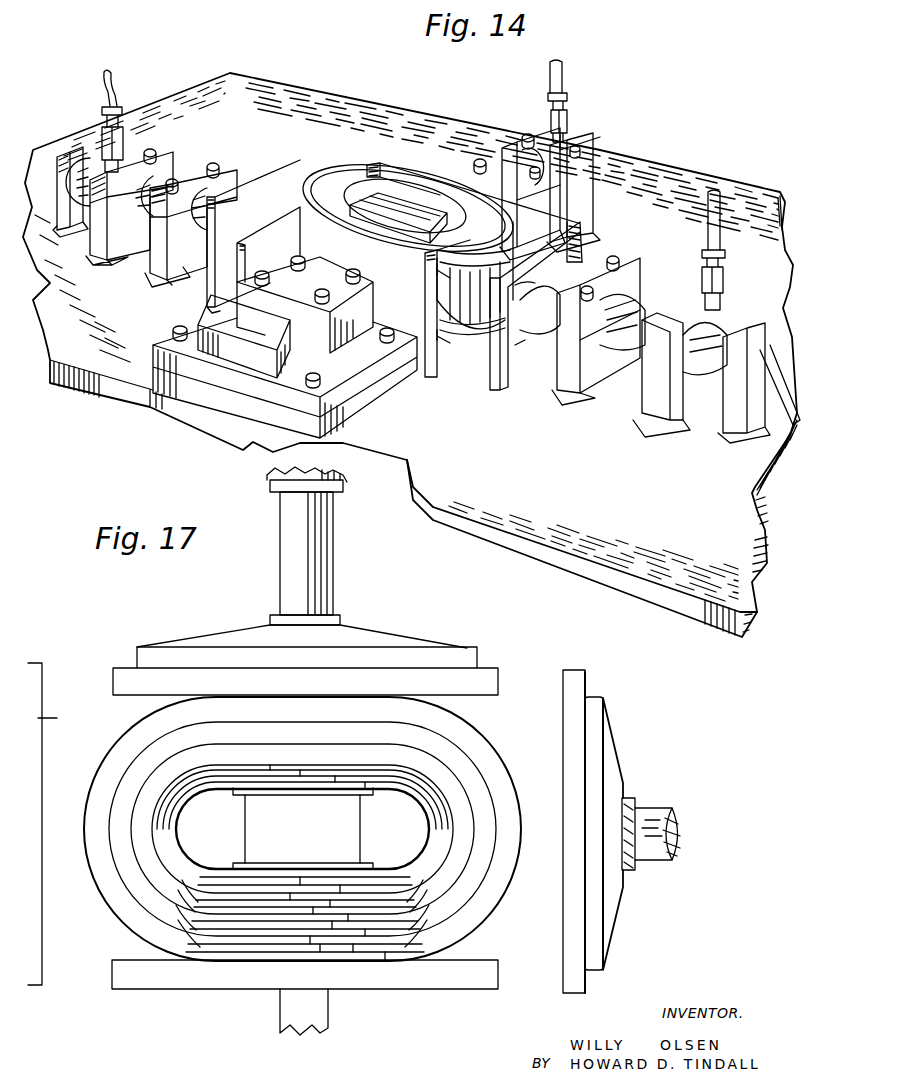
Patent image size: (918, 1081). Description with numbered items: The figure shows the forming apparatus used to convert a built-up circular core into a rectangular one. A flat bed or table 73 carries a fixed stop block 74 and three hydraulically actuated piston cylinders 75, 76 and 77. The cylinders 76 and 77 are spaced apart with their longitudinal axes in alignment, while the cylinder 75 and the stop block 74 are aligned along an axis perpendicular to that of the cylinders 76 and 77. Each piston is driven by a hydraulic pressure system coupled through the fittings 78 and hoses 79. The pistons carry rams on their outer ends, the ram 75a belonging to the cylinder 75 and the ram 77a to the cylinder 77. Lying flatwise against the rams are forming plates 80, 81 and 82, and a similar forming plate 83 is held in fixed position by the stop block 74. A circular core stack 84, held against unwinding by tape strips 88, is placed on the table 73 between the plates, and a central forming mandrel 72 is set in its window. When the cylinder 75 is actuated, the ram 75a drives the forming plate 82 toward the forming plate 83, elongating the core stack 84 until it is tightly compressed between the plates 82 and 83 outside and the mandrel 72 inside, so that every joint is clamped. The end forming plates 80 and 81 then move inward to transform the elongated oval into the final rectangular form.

In FIG. 14, the central forming mandrel 72 is at (385, 205).
In FIG. 17, the central forming mandrel 72 is at (353, 822).
In FIG. 14, the flat bed or table 73 is at (410, 355).
In FIG. 14, the stop block 74 is at (372, 403).
In FIG. 14, the hydraulically actuated piston cylinder 75 is at (500, 150).
In FIG. 17, the hydraulically actuated piston cylinder 75 is at (267, 476).
In FIG. 17, the ram 75a is at (370, 633).
In FIG. 14, the hydraulically actuated piston cylinder 76 is at (158, 183).
In FIG. 14, the hydraulically actuated piston cylinder 77 is at (637, 307).
In FIG. 14, the ram 77a is at (520, 350).
In FIG. 17, the ram 77a is at (615, 777).
In FIG. 14, the fitting 78 is at (123, 140).
In FIG. 14, the hose 79 is at (118, 83).
In FIG. 14, the forming plate 80 is at (273, 168).
In FIG. 17, the forming plate 80 is at (54, 824).
In FIG. 14, the forming plate 81 is at (505, 378).
In FIG. 17, the forming plate 81 is at (573, 702).
In FIG. 14, the forming plate 82 is at (425, 182).
In FIG. 17, the forming plate 82 is at (483, 675).
In FIG. 14, the forming plate 83 is at (280, 235).
In FIG. 17, the forming plate 83 is at (425, 985).
In FIG. 14, the circular core stack 84 is at (480, 350).
In FIG. 17, the circular core stack 84 is at (115, 915).
In FIG. 14, the tape strip 88 is at (450, 335).